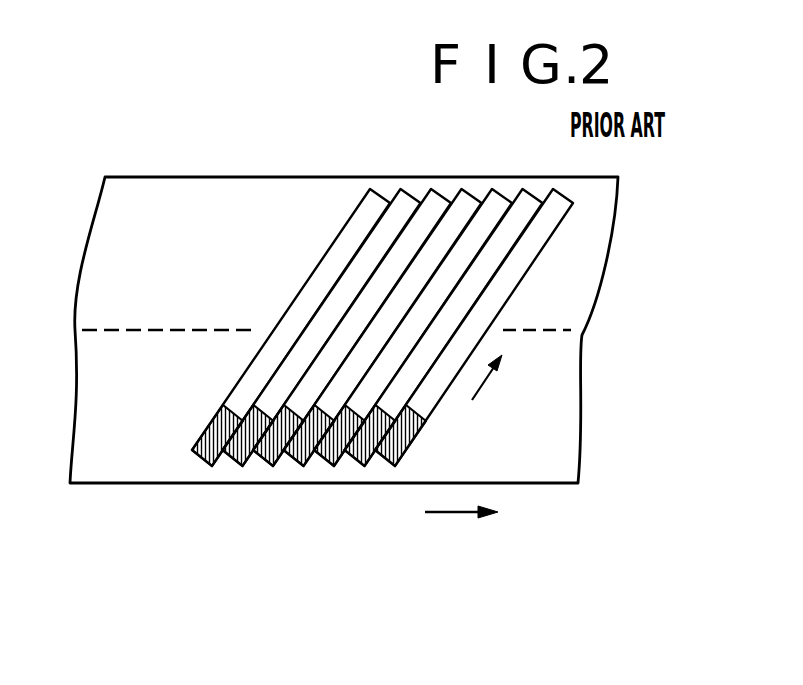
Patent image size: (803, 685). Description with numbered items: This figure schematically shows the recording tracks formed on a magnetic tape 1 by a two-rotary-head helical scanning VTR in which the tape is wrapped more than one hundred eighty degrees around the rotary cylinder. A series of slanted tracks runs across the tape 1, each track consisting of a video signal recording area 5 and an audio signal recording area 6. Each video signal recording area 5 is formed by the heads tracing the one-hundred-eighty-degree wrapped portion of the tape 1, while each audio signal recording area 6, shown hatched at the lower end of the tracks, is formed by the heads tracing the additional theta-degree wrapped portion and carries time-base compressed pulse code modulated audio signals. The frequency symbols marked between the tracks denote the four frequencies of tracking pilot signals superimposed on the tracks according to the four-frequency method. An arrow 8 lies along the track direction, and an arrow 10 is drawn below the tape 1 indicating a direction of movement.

The magnetic tape 1 is at (288, 174).
The video signal recording areas 5 is at (358, 327).
The audio signal recording areas 6 is at (212, 443).
The strip direction 8 is at (483, 383).
The moving direction 10 is at (442, 513).